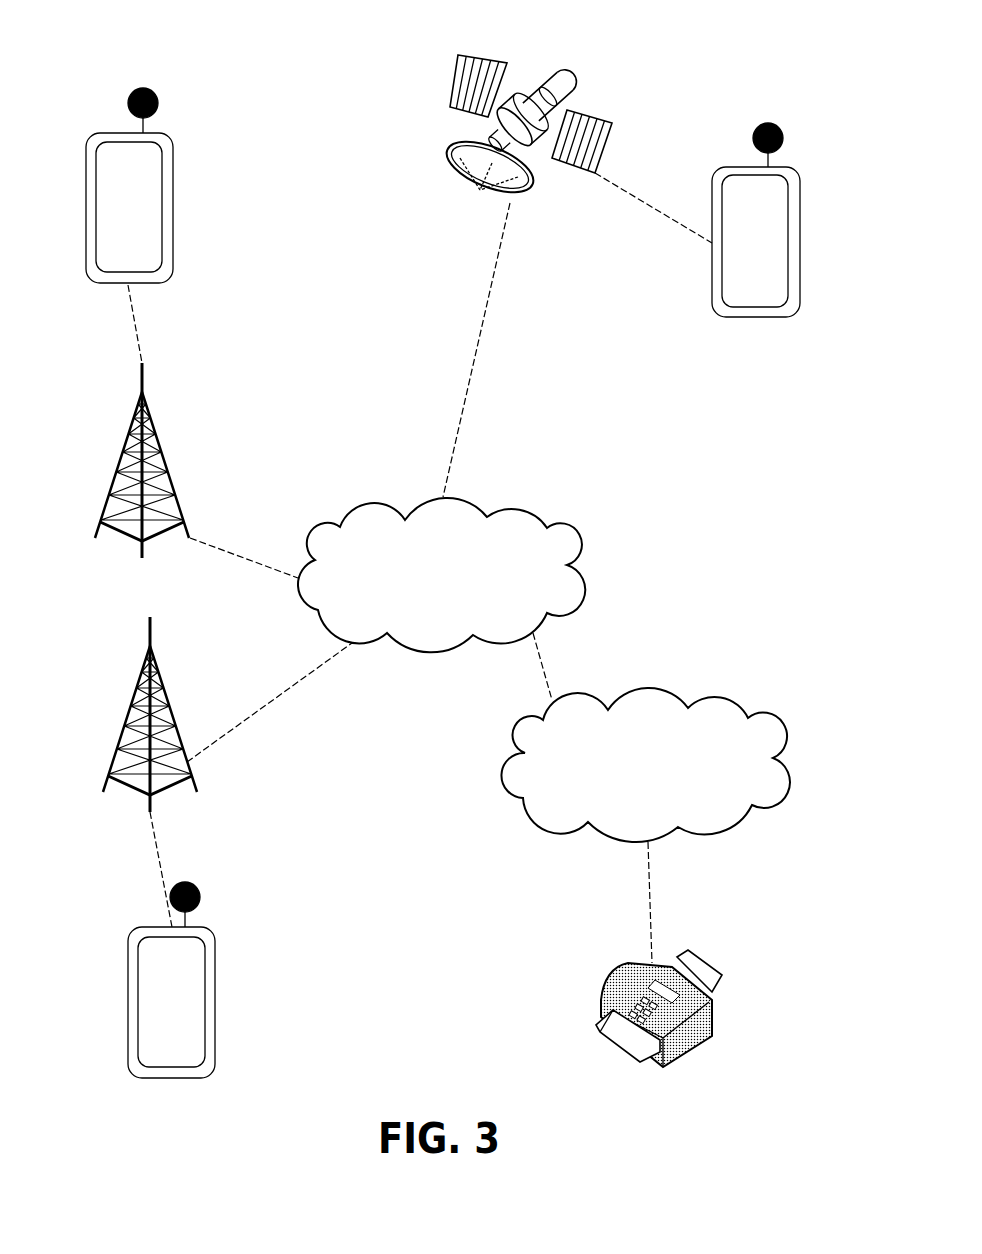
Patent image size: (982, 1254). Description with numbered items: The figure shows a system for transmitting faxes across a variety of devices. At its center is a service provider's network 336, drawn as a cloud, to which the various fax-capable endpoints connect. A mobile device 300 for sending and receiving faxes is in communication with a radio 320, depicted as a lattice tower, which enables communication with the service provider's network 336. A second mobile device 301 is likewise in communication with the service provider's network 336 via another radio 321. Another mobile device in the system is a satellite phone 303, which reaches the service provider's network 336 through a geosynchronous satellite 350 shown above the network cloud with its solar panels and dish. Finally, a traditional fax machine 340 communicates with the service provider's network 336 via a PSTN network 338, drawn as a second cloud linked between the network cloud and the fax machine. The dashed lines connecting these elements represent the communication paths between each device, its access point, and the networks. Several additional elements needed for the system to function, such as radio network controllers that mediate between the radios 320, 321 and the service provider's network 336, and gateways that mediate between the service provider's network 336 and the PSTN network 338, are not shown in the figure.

The mobile device 300 is at (163, 147).
The mobile device 301 is at (215, 965).
The satellite phone 303 is at (725, 315).
The radio 320 is at (158, 447).
The radio 321 is at (158, 682).
The service provider's network 336 is at (568, 527).
The PSTN network 338 is at (670, 698).
The fax machine 340 is at (715, 1002).
The geosynchronous satellite 350 is at (577, 73).